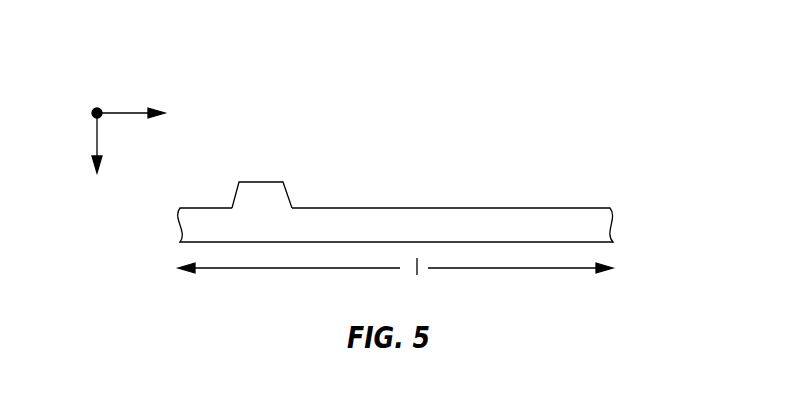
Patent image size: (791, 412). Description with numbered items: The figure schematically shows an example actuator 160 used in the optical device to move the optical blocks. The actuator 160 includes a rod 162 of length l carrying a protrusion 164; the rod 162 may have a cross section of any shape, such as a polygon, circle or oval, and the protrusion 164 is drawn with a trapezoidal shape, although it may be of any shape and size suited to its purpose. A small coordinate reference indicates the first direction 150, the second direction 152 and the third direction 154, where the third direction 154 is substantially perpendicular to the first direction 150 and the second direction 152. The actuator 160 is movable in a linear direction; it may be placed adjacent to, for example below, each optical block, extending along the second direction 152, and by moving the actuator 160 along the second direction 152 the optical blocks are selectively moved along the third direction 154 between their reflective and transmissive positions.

The first direction 150 is at (146, 103).
The second direction 152 is at (114, 150).
The third direction 154 is at (94, 108).
The actuator 160 is at (395, 162).
The rod 162 is at (415, 208).
The protrusion 164 is at (261, 181).